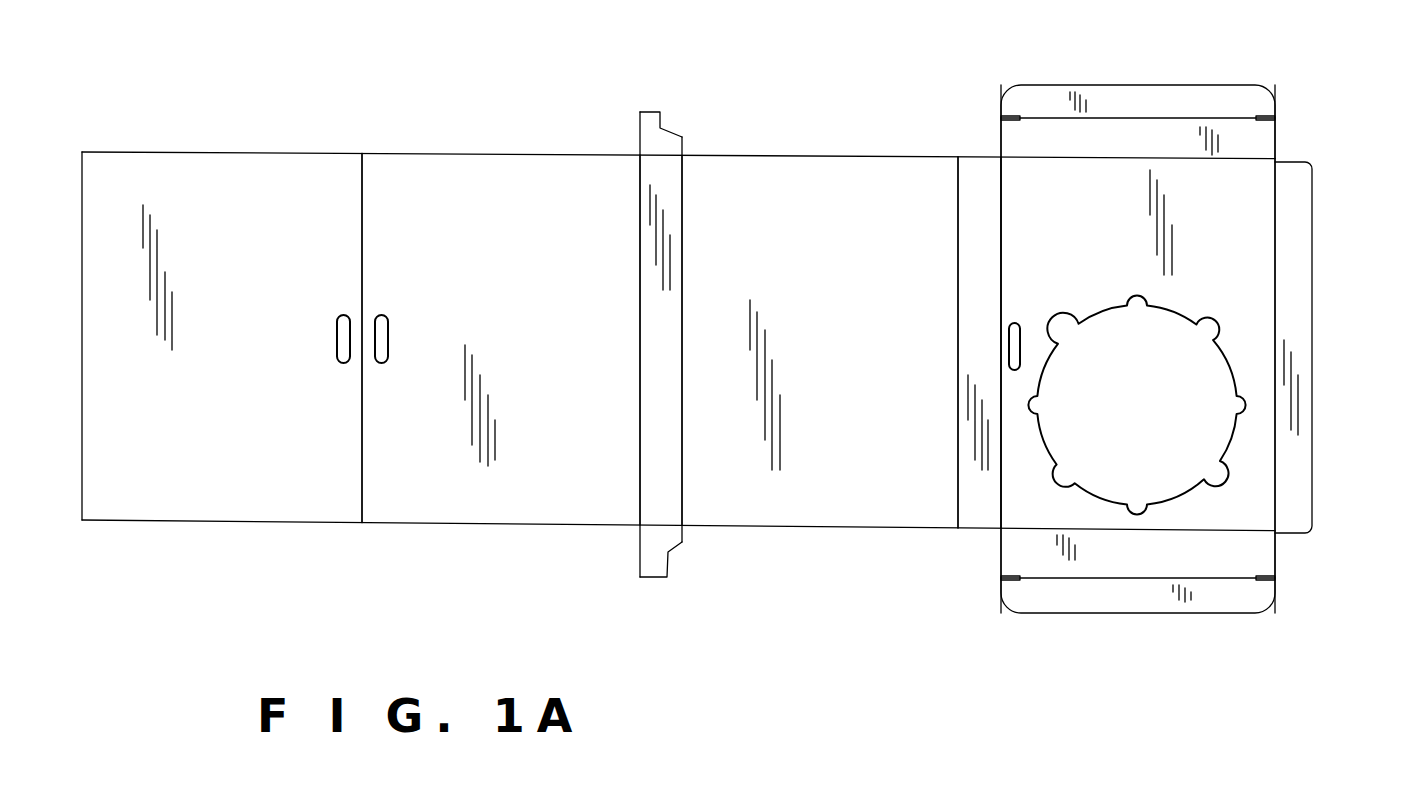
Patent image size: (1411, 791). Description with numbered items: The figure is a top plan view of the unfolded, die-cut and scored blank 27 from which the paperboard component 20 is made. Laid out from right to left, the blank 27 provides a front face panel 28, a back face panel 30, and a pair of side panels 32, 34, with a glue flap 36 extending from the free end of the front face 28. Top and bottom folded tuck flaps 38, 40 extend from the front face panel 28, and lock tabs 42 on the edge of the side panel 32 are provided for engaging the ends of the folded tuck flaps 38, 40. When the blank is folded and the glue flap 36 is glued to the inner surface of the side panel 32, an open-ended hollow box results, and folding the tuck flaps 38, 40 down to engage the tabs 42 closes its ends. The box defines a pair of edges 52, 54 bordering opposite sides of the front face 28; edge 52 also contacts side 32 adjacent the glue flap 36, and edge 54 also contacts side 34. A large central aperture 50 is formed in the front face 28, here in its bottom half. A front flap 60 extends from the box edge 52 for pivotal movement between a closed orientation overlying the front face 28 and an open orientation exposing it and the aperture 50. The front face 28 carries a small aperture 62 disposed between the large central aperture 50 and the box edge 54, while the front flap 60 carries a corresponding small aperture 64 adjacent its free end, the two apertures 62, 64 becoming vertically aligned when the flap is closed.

The paperboard component 20 is at (620, 138).
The blank 27 is at (235, 137).
The front flap 60 is at (471, 148).
The side panel 32 is at (652, 353).
The lock tabs 42 is at (661, 113).
The back face panel 30 is at (832, 192).
The side panel 34 is at (980, 193).
The edge 54 is at (1002, 260).
The front face panel 28 is at (1235, 255).
The top folded tuck flap 38 is at (1172, 140).
The bottom folded tuck flap 40 is at (1112, 565).
The glue flap 36 is at (1292, 493).
The edge 52 is at (1275, 307).
The large central aperture 50 is at (1176, 410).
The small aperture 62 is at (1009, 340).
The small aperture 64 is at (384, 316).